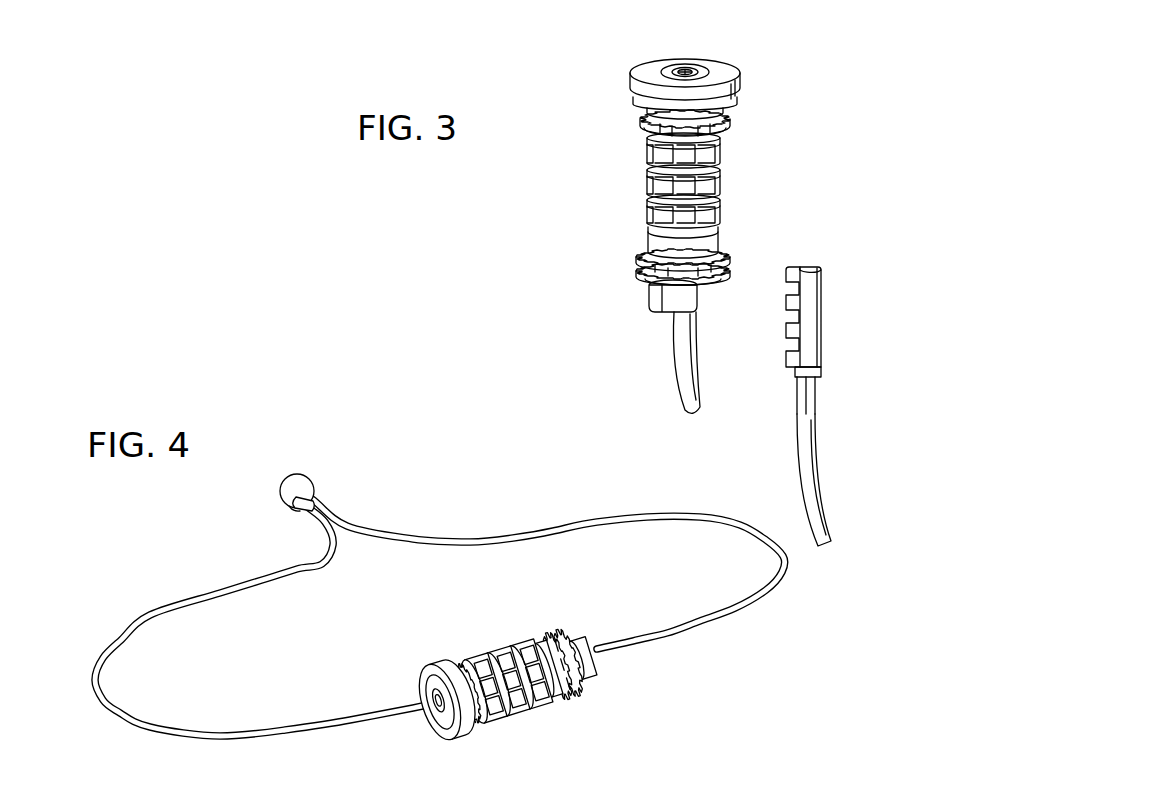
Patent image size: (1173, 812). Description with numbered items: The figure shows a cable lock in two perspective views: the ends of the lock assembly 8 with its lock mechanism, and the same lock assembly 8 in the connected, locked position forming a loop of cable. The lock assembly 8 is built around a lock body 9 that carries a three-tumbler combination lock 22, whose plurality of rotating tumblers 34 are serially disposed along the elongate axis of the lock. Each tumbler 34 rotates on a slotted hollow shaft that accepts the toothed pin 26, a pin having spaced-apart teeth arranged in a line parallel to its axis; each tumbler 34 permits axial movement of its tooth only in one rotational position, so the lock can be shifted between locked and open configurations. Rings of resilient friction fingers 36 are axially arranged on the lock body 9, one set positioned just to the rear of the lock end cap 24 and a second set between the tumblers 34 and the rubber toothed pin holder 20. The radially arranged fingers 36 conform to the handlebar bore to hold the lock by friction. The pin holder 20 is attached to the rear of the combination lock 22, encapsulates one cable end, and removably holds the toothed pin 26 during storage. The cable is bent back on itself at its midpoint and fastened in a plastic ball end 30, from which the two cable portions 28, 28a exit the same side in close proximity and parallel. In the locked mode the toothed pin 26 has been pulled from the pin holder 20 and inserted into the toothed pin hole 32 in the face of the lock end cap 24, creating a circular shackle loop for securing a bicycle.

In FIG. 3, the lock assembly 8 is at (580, 166).
In FIG. 4, the lock assembly 8 is at (462, 639).
In FIG. 3, the lock body 9 is at (645, 130).
In FIG. 3, the rubber toothed pin holder 20 is at (673, 303).
In FIG. 4, the rubber toothed pin holder 20 is at (655, 713).
In FIG. 3, the three-tumbler combination lock 22 is at (718, 232).
In FIG. 4, the three-tumbler combination lock 22 is at (545, 669).
In FIG. 3, the lock end cap 24 is at (650, 68).
In FIG. 4, the lock end cap 24 is at (409, 724).
In FIG. 3, the toothed pin 26 is at (808, 313).
In FIG. 4, the toothed pin 26 is at (386, 768).
In FIG. 3, the cable portion 28 is at (682, 377).
In FIG. 4, the cable portion 28 is at (553, 531).
In FIG. 3, the cable portion 28a is at (808, 448).
In FIG. 4, the cable portion 28a is at (232, 735).
In FIG. 4, the plastic ball end 30 is at (292, 486).
In FIG. 3, the toothed pin hole 32 is at (697, 62).
In FIG. 3, the tumblers 34 is at (712, 190).
In FIG. 4, the tumblers 34 is at (504, 682).
In FIG. 3, the friction fingers 36 is at (732, 122).
In FIG. 4, the friction fingers 36 is at (563, 664).